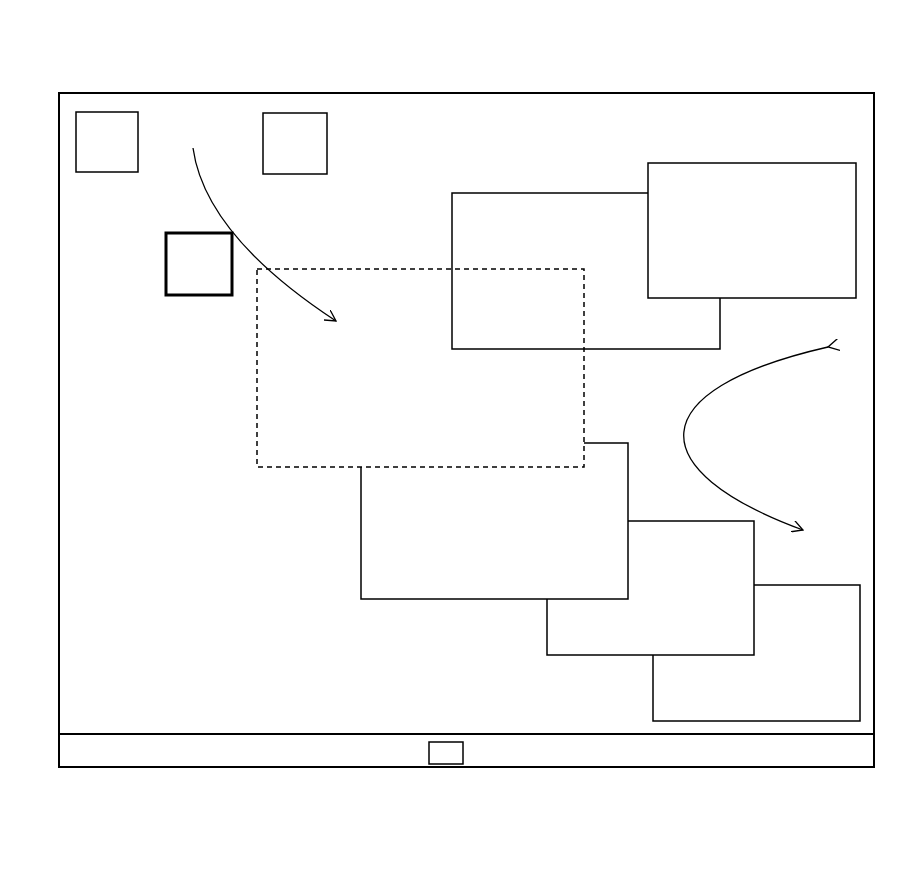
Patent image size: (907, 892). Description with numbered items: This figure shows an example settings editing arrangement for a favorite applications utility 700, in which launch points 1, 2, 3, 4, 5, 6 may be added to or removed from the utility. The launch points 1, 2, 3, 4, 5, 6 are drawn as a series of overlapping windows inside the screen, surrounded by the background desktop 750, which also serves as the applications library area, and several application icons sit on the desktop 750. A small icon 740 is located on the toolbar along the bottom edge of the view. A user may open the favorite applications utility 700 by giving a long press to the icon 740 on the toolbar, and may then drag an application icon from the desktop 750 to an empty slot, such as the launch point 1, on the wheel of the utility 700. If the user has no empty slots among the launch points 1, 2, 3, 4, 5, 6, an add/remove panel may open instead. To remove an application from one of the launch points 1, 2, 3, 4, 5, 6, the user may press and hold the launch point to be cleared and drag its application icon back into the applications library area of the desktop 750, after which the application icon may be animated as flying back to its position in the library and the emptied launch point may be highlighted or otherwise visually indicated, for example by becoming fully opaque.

The favorite applications utility 700 is at (406, 218).
The desktop 750 is at (466, 653).
The icon 740 is at (426, 774).
The launch point 1 is at (752, 230).
The launch point 2 is at (586, 271).
The launch point 3 is at (420, 368).
The launch point 4 is at (494, 521).
The launch point 5 is at (650, 588).
The launch point 6 is at (756, 653).